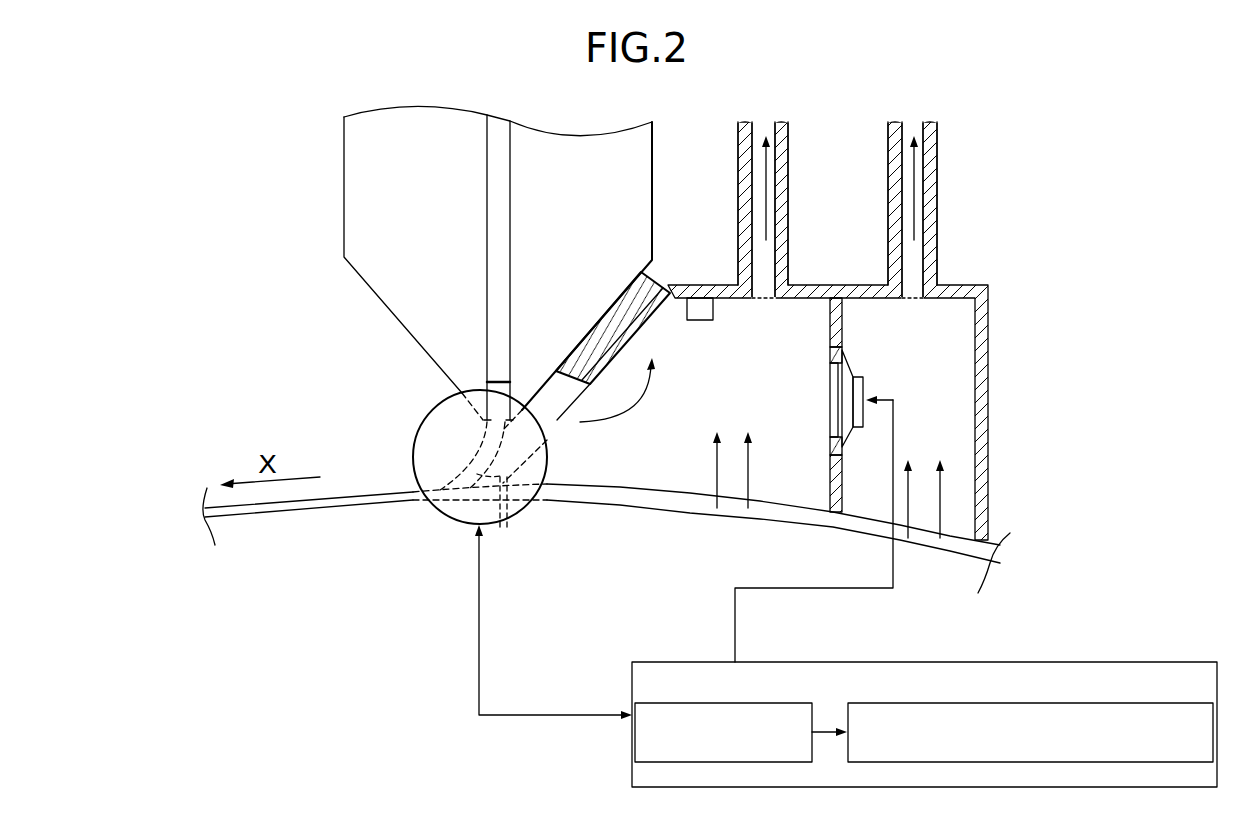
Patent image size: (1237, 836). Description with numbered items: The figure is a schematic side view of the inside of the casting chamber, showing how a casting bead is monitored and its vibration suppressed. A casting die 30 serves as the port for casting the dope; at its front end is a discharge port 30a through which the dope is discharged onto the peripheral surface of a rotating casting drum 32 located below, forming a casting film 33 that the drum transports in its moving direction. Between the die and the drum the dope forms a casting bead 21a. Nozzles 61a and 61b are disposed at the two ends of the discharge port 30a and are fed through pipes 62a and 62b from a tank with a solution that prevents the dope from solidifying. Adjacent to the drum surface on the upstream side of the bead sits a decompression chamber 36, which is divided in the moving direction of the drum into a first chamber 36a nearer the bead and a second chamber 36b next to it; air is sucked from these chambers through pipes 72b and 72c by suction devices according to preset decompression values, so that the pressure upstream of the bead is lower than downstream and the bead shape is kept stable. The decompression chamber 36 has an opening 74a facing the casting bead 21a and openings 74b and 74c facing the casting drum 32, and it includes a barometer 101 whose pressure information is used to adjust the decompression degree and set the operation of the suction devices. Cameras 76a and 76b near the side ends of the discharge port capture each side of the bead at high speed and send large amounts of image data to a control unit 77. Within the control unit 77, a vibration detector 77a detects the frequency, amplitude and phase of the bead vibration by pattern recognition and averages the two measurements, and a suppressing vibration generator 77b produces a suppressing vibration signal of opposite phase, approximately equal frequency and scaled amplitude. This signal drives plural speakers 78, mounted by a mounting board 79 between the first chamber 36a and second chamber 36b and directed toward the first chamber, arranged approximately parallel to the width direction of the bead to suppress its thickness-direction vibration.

The casting die 30 is at (332, 106).
The discharge port 30a is at (477, 437).
The decompression chamber 36 is at (850, 100).
The first chamber 36a is at (760, 424).
The second chamber 36b is at (952, 457).
The pipe 72b is at (740, 177).
The pipe 72c is at (890, 175).
The pipe 62a is at (395, 267).
The pipe 62b is at (488, 332).
The nozzle 61a is at (395, 427).
The nozzle 61b is at (483, 420).
The casting drum 32 is at (372, 513).
The casting film 33 is at (247, 510).
The camera 76a is at (443, 494).
The camera 76b is at (443, 517).
The casting bead 21a is at (502, 507).
The opening 74a is at (557, 420).
The opening 74b is at (735, 497).
The opening 74c is at (947, 543).
The barometer 101 is at (700, 320).
The mounting board 79 is at (842, 350).
The speaker 78 is at (865, 388).
The control unit 77 is at (805, 662).
The vibration detector 77a is at (668, 762).
The suppressing vibration generator 77b is at (887, 762).